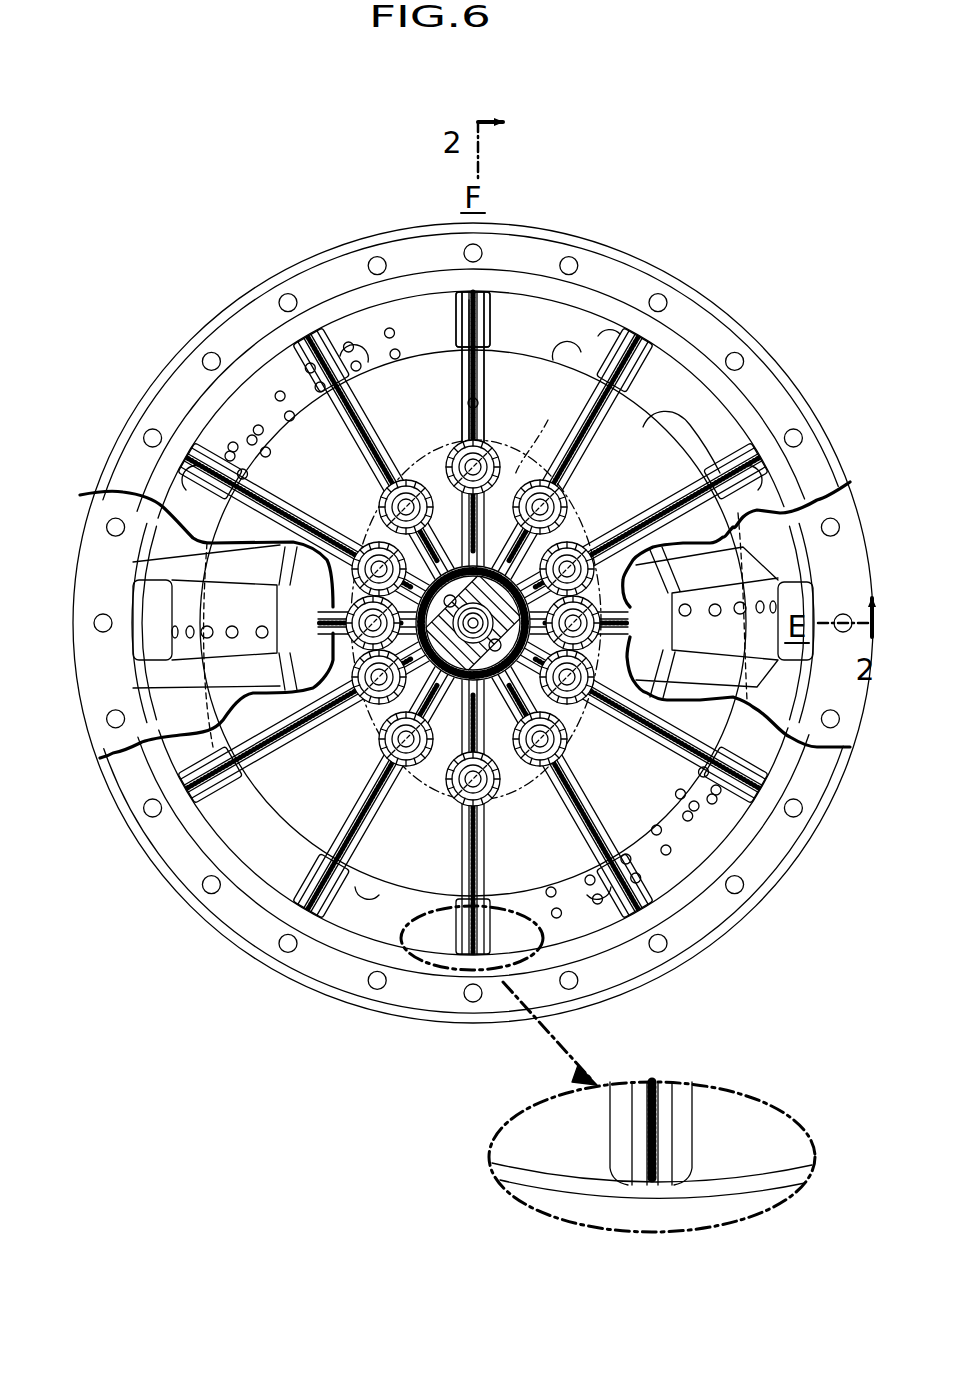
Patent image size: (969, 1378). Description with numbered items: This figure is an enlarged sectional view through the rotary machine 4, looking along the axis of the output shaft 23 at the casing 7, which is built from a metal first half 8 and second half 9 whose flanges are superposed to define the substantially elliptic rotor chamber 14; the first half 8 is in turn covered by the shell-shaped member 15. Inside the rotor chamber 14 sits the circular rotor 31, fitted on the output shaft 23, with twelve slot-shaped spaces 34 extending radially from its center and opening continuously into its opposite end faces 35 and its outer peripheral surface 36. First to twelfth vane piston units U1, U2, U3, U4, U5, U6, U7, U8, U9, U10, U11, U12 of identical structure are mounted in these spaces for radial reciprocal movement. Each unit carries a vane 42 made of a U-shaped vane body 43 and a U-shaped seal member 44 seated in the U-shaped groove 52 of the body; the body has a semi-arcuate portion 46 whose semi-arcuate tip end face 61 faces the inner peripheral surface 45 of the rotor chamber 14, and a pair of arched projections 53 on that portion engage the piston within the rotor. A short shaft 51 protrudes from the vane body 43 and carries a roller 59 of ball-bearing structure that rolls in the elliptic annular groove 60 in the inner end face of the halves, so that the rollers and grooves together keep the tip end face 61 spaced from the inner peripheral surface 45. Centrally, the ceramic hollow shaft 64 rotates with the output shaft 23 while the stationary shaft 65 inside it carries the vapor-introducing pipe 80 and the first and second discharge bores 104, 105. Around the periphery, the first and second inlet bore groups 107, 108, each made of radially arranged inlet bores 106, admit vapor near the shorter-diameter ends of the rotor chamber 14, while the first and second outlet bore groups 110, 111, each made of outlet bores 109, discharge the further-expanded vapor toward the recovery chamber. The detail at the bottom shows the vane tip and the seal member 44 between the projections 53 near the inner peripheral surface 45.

The rotary body / wheel assembly 4 is at (720, 262).
The casing 7 is at (752, 330).
The first half 8 is at (160, 460).
The second half 9 is at (682, 276).
The rotor chamber 14 is at (570, 338).
The shell-shaped member 15 is at (250, 292).
The output shaft 23 is at (460, 468).
The rotor 31 is at (494, 378).
The slot-shaped space 34 is at (483, 425).
The end face 35 is at (665, 416).
The outer peripheral surface 36 is at (565, 355).
The vane 42 is at (460, 386).
The vane body 43 is at (670, 1110).
The seal member 44 is at (480, 372).
The inner peripheral surface 45 is at (593, 345).
The semi-arcuate portion 46 is at (670, 1168).
The short shaft 51 is at (465, 661).
The U-shaped groove 52 is at (652, 1183).
The projection 53 is at (457, 322).
The roller 59 is at (470, 458).
The annular groove 60 is at (476, 591).
The semi-arcuate tip end face 61 is at (660, 1178).
The hollow shaft 64 is at (572, 547).
The stationary shaft 65 is at (372, 702).
The vapor-introducing pipe 80 is at (468, 645).
The first discharge bore 104 is at (386, 506).
The second discharge bore 105 is at (498, 785).
The inlet bore 106 is at (204, 624).
The first inlet bore group 107 is at (747, 614).
The second inlet bore group 108 is at (204, 624).
The outlet bore 109 is at (360, 330).
The first outlet bore group 110 is at (242, 445).
The second outlet bore group 111 is at (700, 880).
The first vane piston unit U1 is at (608, 612).
The second vane piston unit U2 is at (722, 468).
The third vane piston unit U3 is at (650, 353).
The fourth vane piston unit U4 is at (465, 369).
The fifth vane piston unit U5 is at (318, 355).
The sixth vane piston unit U6 is at (225, 482).
The seventh vane piston unit U7 is at (335, 612).
The eighth vane piston unit U8 is at (228, 777).
The ninth vane piston unit U9 is at (310, 862).
The tenth vane piston unit U10 is at (455, 930).
The eleventh vane piston unit U11 is at (634, 898).
The twelfth vane piston unit U12 is at (727, 768).